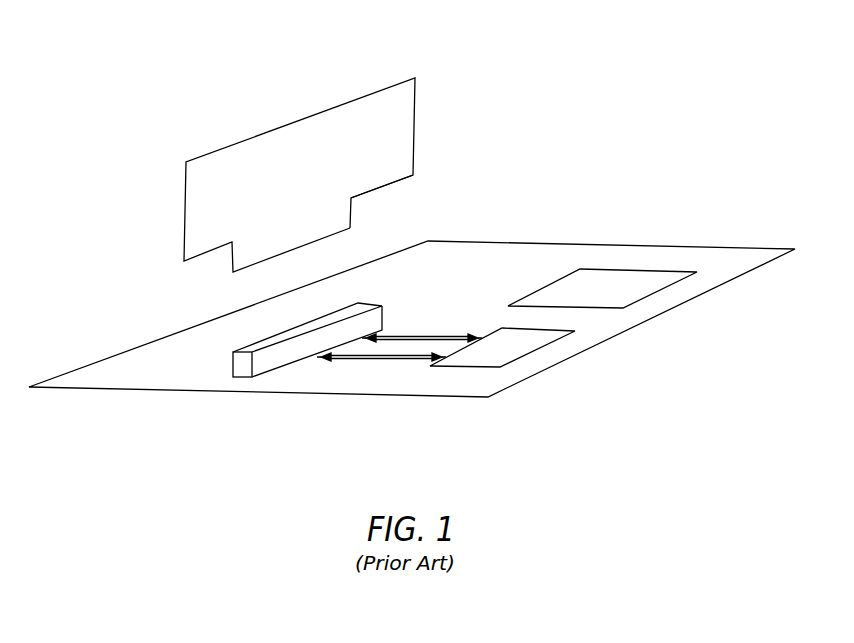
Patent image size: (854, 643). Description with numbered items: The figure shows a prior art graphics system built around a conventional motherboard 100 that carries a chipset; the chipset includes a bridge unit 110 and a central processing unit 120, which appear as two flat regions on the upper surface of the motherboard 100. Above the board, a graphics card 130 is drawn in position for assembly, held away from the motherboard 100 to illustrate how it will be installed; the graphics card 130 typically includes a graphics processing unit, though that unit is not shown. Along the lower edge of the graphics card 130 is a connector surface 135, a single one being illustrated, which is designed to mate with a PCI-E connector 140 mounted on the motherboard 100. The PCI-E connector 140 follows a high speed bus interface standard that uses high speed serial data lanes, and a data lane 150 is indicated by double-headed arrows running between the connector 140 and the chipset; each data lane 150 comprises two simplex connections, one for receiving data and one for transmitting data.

The motherboard 100 is at (605, 342).
The bridge unit 110 is at (532, 352).
The central processing unit 120 is at (660, 290).
The graphics card 130 is at (372, 92).
The connector surface 135 is at (350, 228).
The PCI-E connector 140 is at (242, 377).
The data lane 150 is at (417, 328).